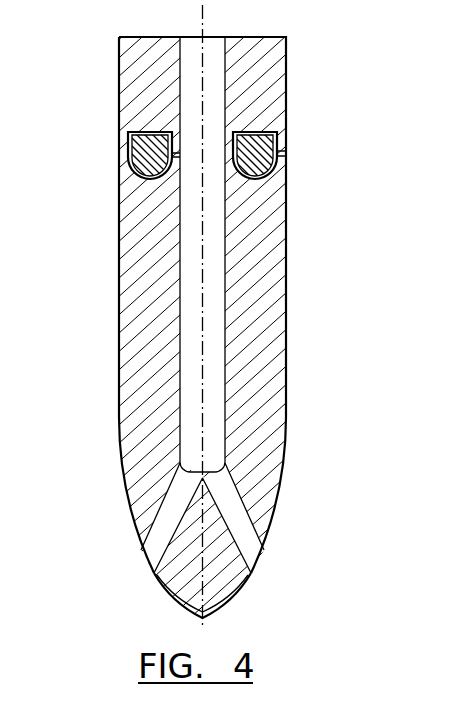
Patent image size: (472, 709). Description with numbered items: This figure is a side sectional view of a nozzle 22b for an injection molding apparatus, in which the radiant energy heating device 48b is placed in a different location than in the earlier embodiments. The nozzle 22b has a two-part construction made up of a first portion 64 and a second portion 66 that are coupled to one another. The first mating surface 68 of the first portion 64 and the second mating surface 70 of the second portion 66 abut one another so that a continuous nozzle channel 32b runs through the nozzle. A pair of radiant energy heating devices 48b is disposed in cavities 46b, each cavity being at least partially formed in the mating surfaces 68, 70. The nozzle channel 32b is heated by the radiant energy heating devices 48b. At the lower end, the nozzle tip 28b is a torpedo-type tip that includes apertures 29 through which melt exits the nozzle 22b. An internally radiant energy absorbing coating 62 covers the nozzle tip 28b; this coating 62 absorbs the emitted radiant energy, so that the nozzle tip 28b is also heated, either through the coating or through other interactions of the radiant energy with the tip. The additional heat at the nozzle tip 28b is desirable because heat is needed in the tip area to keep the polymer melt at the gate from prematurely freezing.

The nozzle 22b is at (269, 323).
The first portion 64 is at (265, 66).
The second portion 66 is at (133, 235).
The first mating surface 68 is at (130, 157).
The second mating surface 70 is at (150, 177).
The cavities 46b is at (279, 155).
The radiant energy heating device 48b is at (276, 162).
The nozzle channel 32b is at (187, 343).
The apertures 29 is at (157, 533).
The nozzle tip 28b is at (271, 559).
The internally radiant energy absorbing coating 62 is at (245, 584).